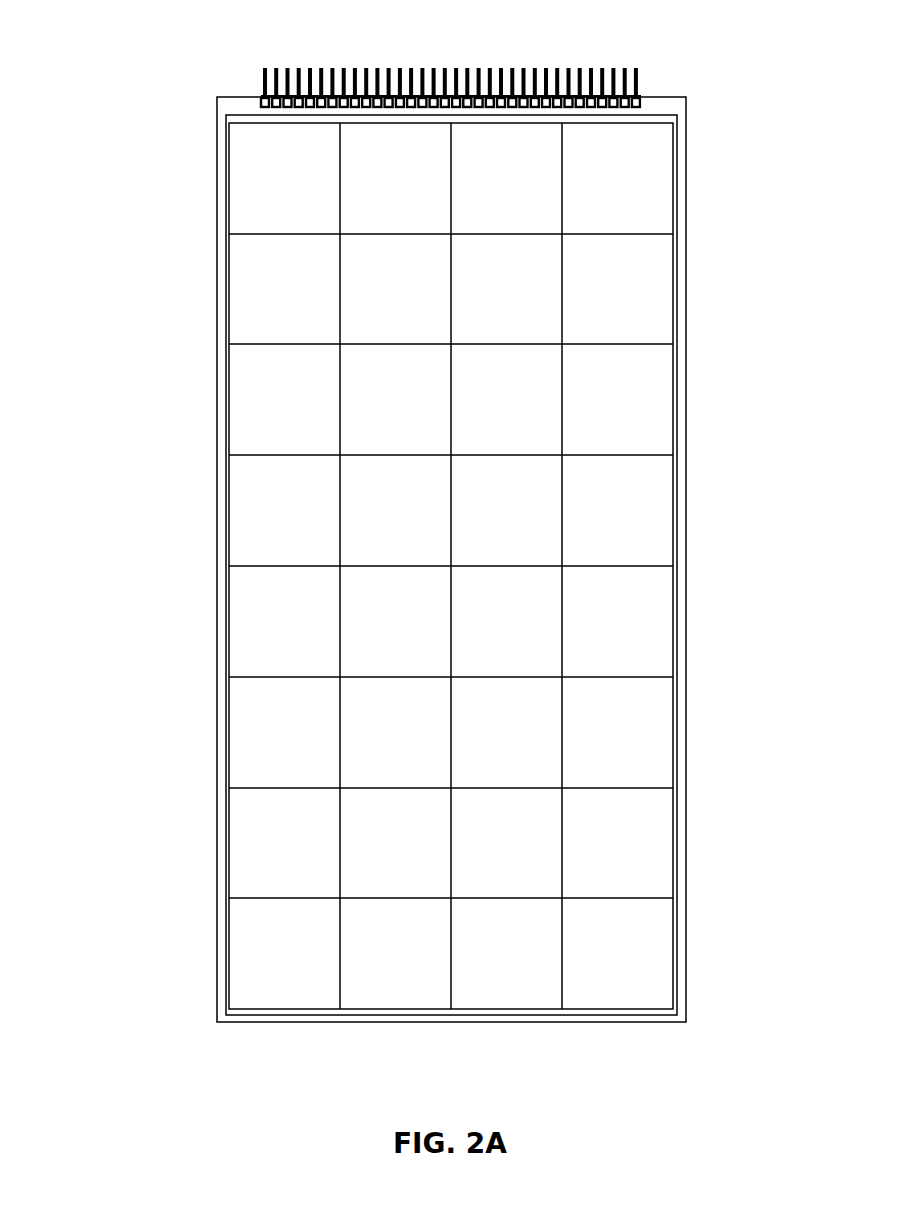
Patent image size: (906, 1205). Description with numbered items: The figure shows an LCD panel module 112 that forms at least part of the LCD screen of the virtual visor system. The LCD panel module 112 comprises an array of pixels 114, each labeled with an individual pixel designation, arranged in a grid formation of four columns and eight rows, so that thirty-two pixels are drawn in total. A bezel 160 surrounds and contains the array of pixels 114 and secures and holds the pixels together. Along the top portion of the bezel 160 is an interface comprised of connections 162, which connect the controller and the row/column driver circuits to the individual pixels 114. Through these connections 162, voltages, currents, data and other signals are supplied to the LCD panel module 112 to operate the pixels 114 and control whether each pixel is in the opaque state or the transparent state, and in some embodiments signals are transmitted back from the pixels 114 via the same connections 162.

The LCD panel module 112 is at (135, 86).
The array of pixels 114 is at (249, 363).
The bezel 160 is at (677, 402).
The connections 162 is at (655, 76).